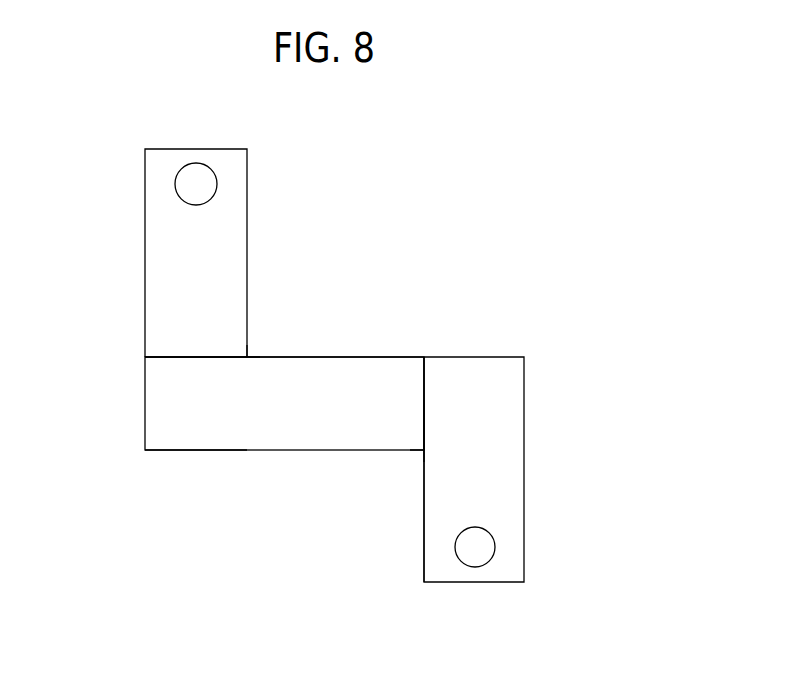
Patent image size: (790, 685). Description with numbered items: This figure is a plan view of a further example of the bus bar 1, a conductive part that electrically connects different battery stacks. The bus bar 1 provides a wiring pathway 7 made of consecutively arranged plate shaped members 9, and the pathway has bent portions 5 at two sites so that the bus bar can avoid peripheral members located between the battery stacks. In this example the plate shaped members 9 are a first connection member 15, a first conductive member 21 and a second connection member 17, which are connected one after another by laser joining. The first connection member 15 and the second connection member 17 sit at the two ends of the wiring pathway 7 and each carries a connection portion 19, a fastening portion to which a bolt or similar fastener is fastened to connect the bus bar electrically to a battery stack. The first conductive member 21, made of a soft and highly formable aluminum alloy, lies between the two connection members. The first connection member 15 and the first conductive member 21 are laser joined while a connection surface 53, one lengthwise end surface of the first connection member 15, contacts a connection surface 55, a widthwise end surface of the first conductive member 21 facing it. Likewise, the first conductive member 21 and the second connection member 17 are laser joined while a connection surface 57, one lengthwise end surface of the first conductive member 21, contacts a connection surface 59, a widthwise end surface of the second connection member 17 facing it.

The bus bar 1 is at (390, 190).
The wiring pathway 7 is at (230, 514).
The first conductive member 21 is at (323, 378).
The first connection member 15 is at (150, 224).
The second connection member 17 is at (507, 472).
The connection portion 19 is at (185, 190).
The plate shaped member 9 is at (238, 215).
The bent portion 5 is at (247, 357).
The connection surface 55 is at (170, 357).
The connection surface 53 is at (198, 357).
The connection surface 57 is at (427, 393).
The connection surface 59 is at (424, 416).